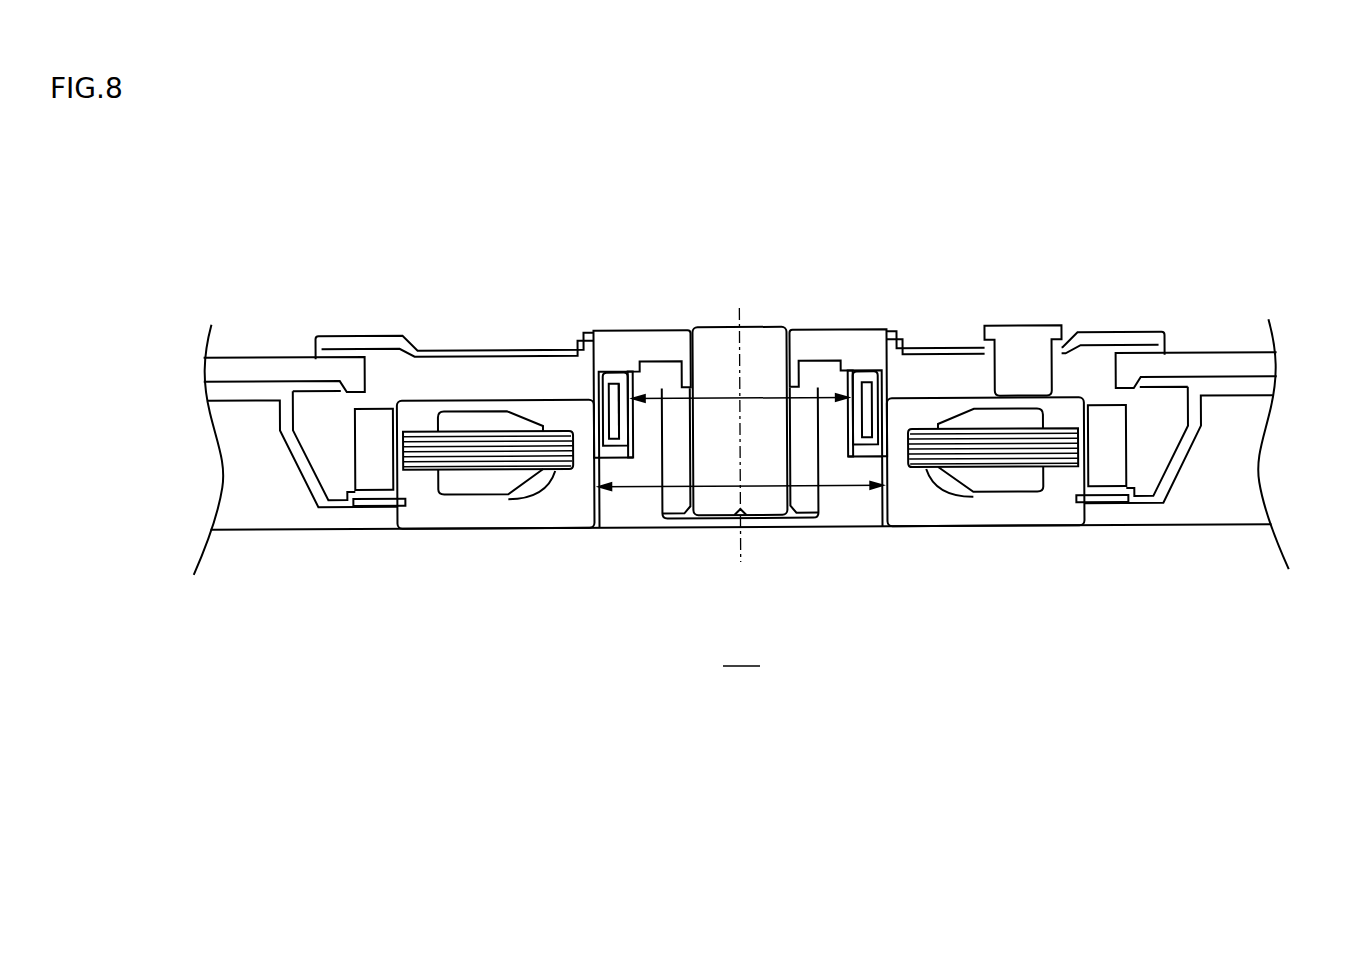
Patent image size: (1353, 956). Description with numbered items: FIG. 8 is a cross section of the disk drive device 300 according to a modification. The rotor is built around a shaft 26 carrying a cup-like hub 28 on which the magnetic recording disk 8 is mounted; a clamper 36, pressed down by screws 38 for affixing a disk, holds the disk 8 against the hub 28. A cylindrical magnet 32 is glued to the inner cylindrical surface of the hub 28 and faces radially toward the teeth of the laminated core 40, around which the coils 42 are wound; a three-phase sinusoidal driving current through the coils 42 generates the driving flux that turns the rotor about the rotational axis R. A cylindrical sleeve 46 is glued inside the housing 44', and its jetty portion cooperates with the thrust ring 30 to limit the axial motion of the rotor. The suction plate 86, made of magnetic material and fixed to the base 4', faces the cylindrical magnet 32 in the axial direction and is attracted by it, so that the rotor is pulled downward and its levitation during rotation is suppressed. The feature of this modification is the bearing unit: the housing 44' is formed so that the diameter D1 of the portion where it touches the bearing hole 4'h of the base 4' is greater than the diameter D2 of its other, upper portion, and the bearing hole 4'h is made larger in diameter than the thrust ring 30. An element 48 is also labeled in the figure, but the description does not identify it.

The magnetic recording disk 8 is at (247, 366).
The clamper 36 is at (320, 346).
The laminated core 40 is at (423, 441).
The coils 42 is at (487, 418).
The spring 48 is at (625, 411).
The thrust ring 30 is at (608, 384).
The hub 28 is at (652, 340).
The shaft 26 is at (716, 340).
The screws for affixing a disk 38 is at (1032, 345).
The cylindrical magnet 32 is at (377, 446).
The base 4' is at (745, 447).
The suction plate 86 is at (380, 504).
The sleeve 46 is at (682, 498).
The housing 44' is at (741, 495).
The bearing hole 4'h is at (755, 525).
The diameter of the housing portion touching the bearing hole D1 is at (627, 487).
The diameter of the other housing portion D2 is at (716, 400).
The rotational axis R is at (740, 423).
The disk drive device 300 is at (741, 654).